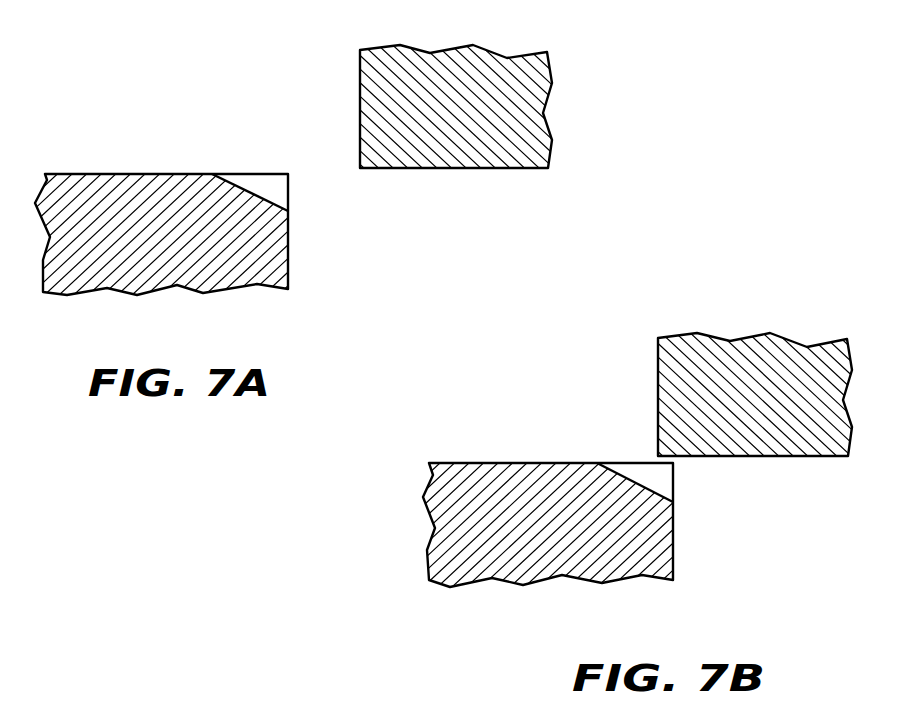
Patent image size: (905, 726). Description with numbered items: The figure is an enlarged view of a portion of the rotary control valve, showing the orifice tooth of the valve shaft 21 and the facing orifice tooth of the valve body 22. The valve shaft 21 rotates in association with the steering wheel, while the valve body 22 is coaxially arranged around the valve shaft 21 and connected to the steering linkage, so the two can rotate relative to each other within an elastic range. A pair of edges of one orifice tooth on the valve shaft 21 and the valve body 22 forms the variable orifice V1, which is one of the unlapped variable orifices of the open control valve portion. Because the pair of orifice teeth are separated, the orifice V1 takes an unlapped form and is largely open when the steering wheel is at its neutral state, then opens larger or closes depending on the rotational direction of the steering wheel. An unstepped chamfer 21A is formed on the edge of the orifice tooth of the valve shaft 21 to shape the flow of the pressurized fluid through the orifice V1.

In FIG. 7A, the valve shaft 21 is at (237, 265).
In FIG. 7B, the valve shaft 21 is at (620, 550).
In FIG. 7A, the unstepped chamfer 21A is at (265, 180).
In FIG. 7B, the unstepped chamfer 21A is at (645, 473).
In FIG. 7A, the valve body 22 is at (447, 150).
In FIG. 7B, the valve body 22 is at (715, 377).
In FIG. 7A, the unlapped variable orifice V1 is at (323, 152).
In FIG. 7B, the unlapped variable orifice V1 is at (690, 485).